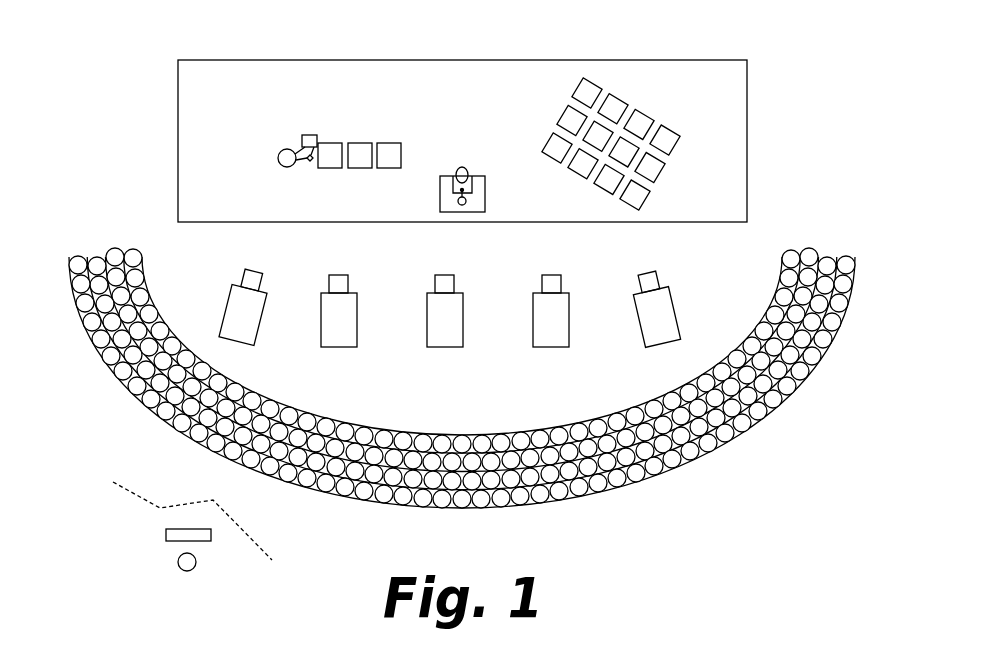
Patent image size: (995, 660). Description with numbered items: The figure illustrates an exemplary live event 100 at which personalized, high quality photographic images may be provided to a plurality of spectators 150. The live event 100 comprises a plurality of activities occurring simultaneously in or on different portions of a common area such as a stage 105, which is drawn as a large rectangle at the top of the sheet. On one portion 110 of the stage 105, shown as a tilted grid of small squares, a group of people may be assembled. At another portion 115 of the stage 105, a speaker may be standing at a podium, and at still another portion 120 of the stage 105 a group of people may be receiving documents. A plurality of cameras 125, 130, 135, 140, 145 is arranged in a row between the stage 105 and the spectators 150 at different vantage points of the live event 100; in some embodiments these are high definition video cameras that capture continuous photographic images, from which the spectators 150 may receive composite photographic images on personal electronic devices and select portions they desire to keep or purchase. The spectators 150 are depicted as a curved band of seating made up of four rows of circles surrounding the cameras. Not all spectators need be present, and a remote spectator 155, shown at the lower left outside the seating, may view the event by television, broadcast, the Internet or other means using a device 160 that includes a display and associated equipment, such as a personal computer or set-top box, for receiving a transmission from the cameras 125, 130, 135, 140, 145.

The live event 100 is at (113, 45).
The stage 105 is at (202, 194).
The portion of the stage 110 is at (536, 97).
The portion of the stage 115 is at (429, 194).
The portion of the stage 120 is at (276, 130).
The camera 125 is at (246, 324).
The camera 130 is at (329, 337).
The camera 135 is at (443, 333).
The camera 140 is at (561, 338).
The camera 145 is at (656, 330).
The spectators 150 is at (103, 384).
The remote spectator 155 is at (201, 579).
The device 160 is at (168, 540).